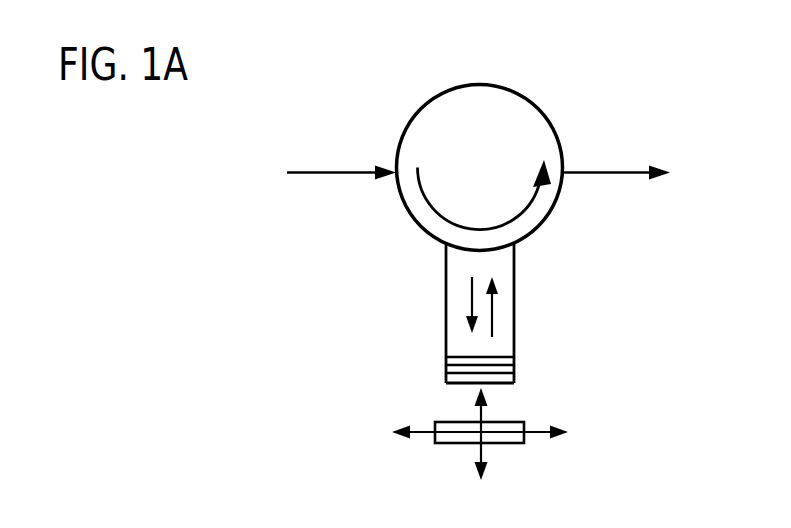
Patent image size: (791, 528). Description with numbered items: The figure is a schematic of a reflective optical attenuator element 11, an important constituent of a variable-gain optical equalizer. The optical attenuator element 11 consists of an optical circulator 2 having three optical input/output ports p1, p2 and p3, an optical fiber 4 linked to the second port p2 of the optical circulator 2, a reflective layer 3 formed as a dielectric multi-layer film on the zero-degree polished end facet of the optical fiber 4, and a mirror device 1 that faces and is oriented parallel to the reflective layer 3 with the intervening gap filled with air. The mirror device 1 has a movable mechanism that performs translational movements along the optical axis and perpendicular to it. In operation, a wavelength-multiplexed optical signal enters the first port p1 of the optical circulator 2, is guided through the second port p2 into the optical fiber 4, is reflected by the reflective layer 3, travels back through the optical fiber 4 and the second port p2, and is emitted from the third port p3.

The optical attenuator element 11 is at (604, 78).
The optical circulator 2 is at (424, 104).
The optical fiber 4 is at (514, 300).
The reflective layer 3 is at (438, 355).
The mirror device 1 is at (510, 421).
The first optical input/output port p1 is at (393, 180).
The second optical input/output port p2 is at (482, 249).
The third optical input/output port p3 is at (564, 178).